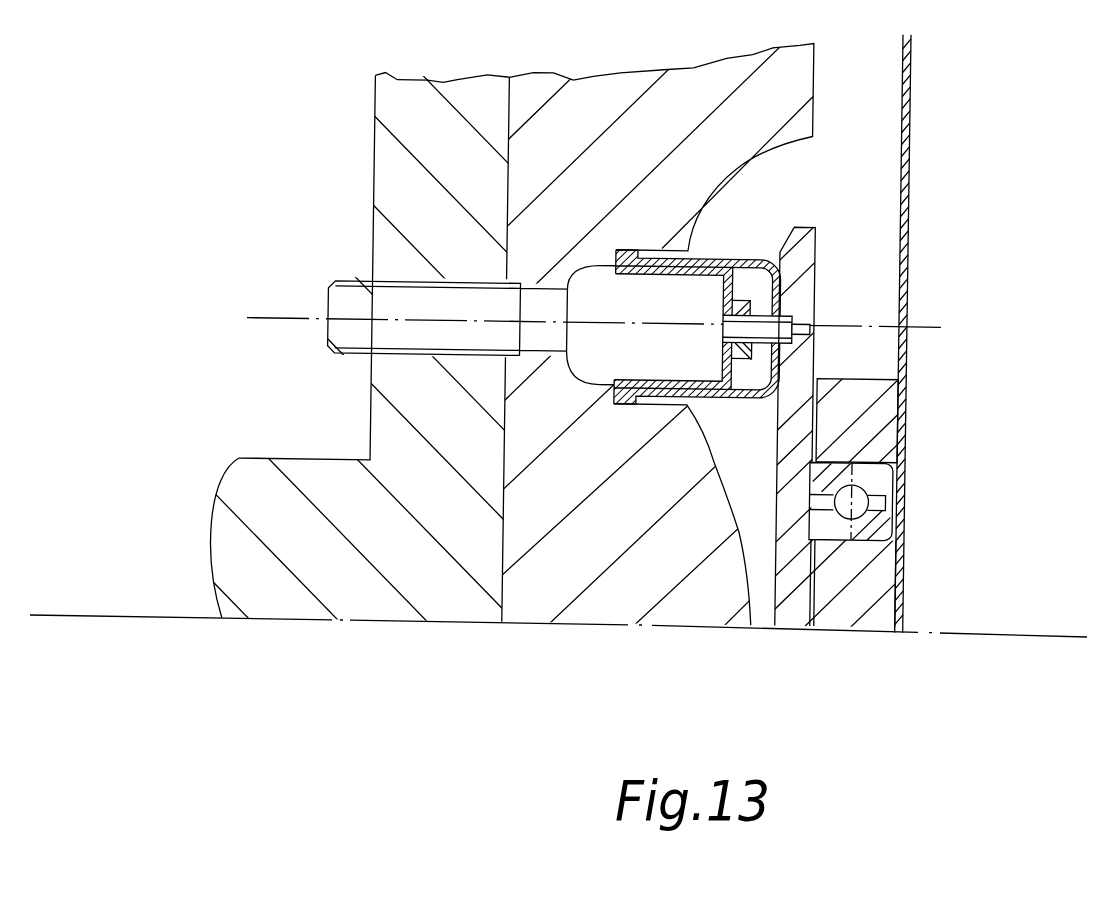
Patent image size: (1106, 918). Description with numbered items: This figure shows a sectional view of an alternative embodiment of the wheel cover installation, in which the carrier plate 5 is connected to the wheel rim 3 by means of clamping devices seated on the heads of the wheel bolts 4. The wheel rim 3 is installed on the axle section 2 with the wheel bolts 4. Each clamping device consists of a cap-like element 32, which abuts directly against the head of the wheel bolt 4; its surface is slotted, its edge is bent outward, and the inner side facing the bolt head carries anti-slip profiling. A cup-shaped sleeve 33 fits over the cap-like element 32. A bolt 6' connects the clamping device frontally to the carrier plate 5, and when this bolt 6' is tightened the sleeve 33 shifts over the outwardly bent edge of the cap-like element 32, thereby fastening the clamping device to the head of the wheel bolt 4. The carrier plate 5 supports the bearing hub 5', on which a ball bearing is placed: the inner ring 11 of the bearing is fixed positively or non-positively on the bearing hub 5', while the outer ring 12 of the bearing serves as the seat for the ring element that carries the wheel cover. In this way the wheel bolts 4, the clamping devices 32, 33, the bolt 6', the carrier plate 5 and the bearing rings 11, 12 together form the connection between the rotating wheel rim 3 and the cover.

The axle section 2 is at (399, 447).
The wheel rim 3 is at (546, 420).
The wheel bolt 4 is at (355, 301).
The carrier plate 5 is at (749, 424).
The bearing hub 5' is at (937, 579).
The bolt 6' is at (893, 351).
The inner ring 11 is at (878, 524).
The outer ring 12 is at (885, 476).
The cap-like element 32 is at (783, 297).
The cup-shaped sleeve 33 is at (784, 252).